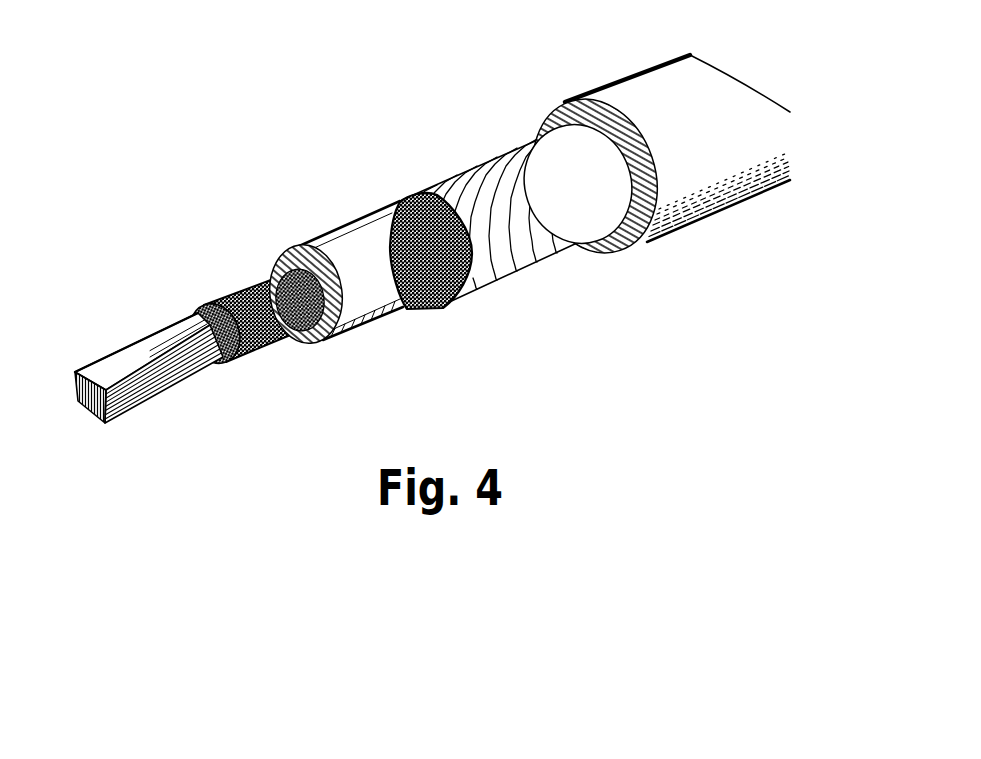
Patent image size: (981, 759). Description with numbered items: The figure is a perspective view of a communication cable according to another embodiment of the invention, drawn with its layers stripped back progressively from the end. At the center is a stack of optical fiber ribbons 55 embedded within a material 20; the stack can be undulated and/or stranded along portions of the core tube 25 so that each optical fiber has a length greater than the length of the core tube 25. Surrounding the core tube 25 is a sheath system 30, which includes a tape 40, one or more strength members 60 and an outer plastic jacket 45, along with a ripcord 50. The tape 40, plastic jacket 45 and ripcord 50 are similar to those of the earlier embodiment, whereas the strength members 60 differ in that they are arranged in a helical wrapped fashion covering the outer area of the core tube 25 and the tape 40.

The material 20 is at (232, 366).
The core tube 25 is at (311, 349).
The sheath system 30 is at (340, 172).
The tape 40 is at (404, 311).
The outer plastic jacket 45 is at (651, 240).
The ripcord 50 is at (325, 237).
The stack of optical fiber ribbons 55 is at (94, 413).
The strength members 60 is at (481, 288).